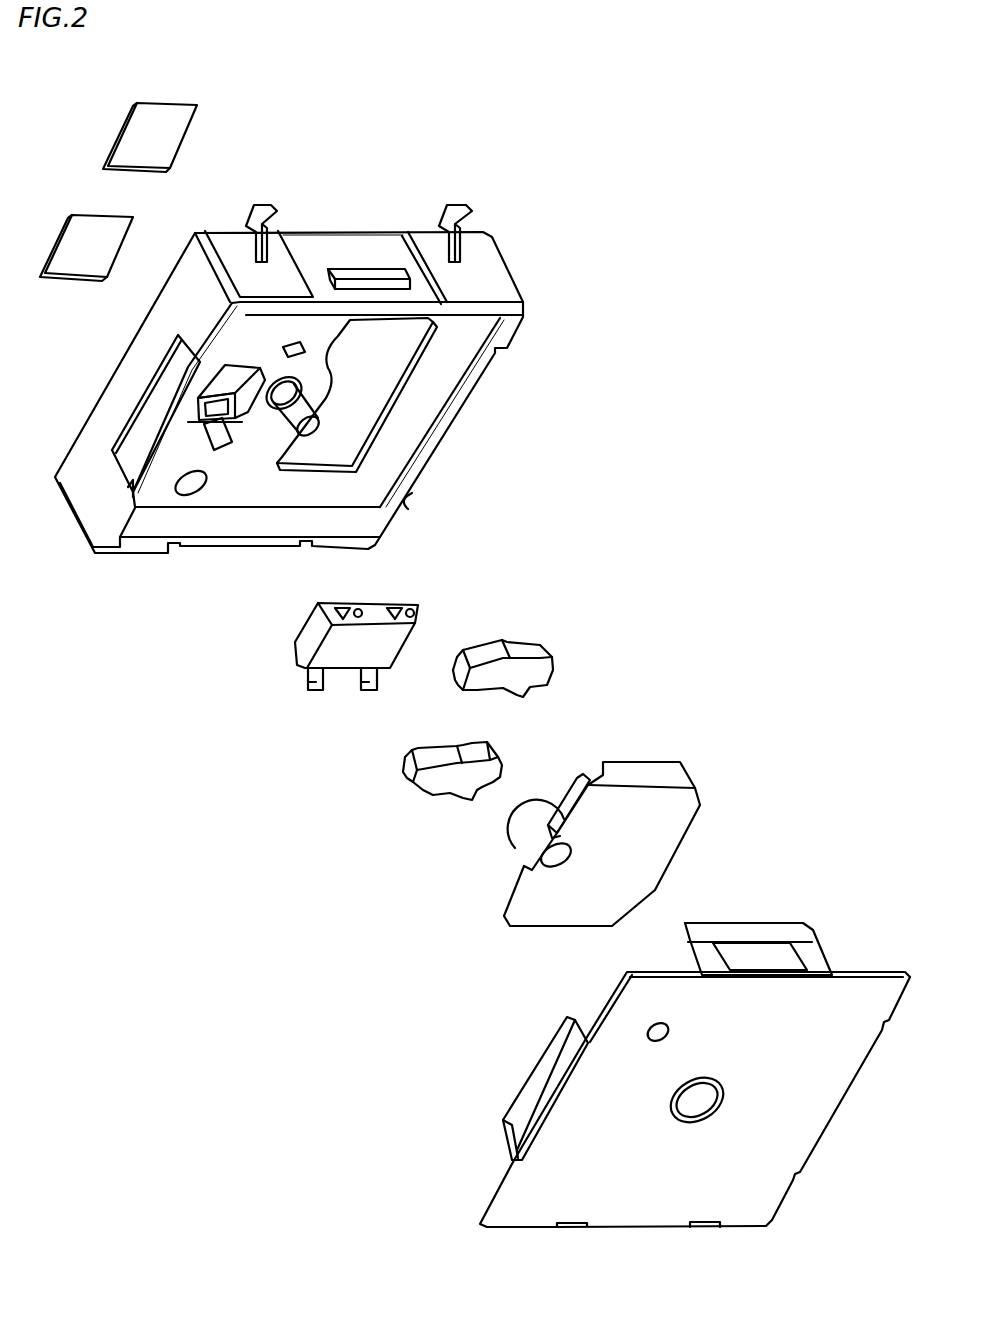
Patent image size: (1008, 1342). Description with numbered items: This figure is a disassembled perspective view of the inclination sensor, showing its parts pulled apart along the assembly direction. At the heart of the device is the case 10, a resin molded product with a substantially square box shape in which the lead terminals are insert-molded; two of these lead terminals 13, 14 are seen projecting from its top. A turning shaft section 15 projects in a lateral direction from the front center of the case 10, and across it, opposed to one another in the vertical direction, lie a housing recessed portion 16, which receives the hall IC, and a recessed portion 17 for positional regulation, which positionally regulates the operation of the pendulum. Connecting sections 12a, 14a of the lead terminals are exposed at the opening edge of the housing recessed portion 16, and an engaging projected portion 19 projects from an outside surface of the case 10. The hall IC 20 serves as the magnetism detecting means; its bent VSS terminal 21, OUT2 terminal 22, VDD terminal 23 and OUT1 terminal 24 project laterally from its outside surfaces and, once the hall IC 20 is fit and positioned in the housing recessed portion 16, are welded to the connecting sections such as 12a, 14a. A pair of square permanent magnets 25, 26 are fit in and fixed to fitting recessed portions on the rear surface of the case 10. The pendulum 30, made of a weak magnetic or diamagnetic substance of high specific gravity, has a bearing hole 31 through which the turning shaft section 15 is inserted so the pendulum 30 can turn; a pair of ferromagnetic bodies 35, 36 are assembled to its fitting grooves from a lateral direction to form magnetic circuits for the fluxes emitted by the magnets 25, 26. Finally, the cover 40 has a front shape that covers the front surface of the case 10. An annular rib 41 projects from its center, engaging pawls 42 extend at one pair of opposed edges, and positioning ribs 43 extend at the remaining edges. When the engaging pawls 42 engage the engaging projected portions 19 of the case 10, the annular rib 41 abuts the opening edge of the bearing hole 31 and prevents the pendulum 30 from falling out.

The case 10 is at (492, 270).
The connecting section 12a is at (220, 437).
The lead terminal 13 is at (258, 208).
The lead terminal 14 is at (455, 213).
The connecting section 14a is at (288, 347).
The turning shaft section 15 is at (320, 407).
The housing recessed portion 16 is at (220, 377).
The recessed portion for positional regulation 17 is at (383, 357).
The engaging projected portion 19 is at (375, 265).
The hall IC 20 is at (300, 640).
The VSS terminal 21 is at (312, 690).
The OUT2 terminal 22 is at (364, 690).
The VDD terminal 23 is at (350, 609).
The OUT1 terminal 24 is at (402, 609).
The permanent magnet 25 is at (67, 265).
The permanent magnet 26 is at (175, 130).
The pendulum 30 is at (672, 812).
The bearing hole 31 is at (553, 851).
The ferromagnetic body 35 is at (430, 783).
The ferromagnetic body 36 is at (520, 660).
The cover 40 is at (868, 990).
The annular rib 41 is at (725, 1092).
The engaging pawl 42 is at (760, 930).
The positioning rib 43 is at (537, 1082).